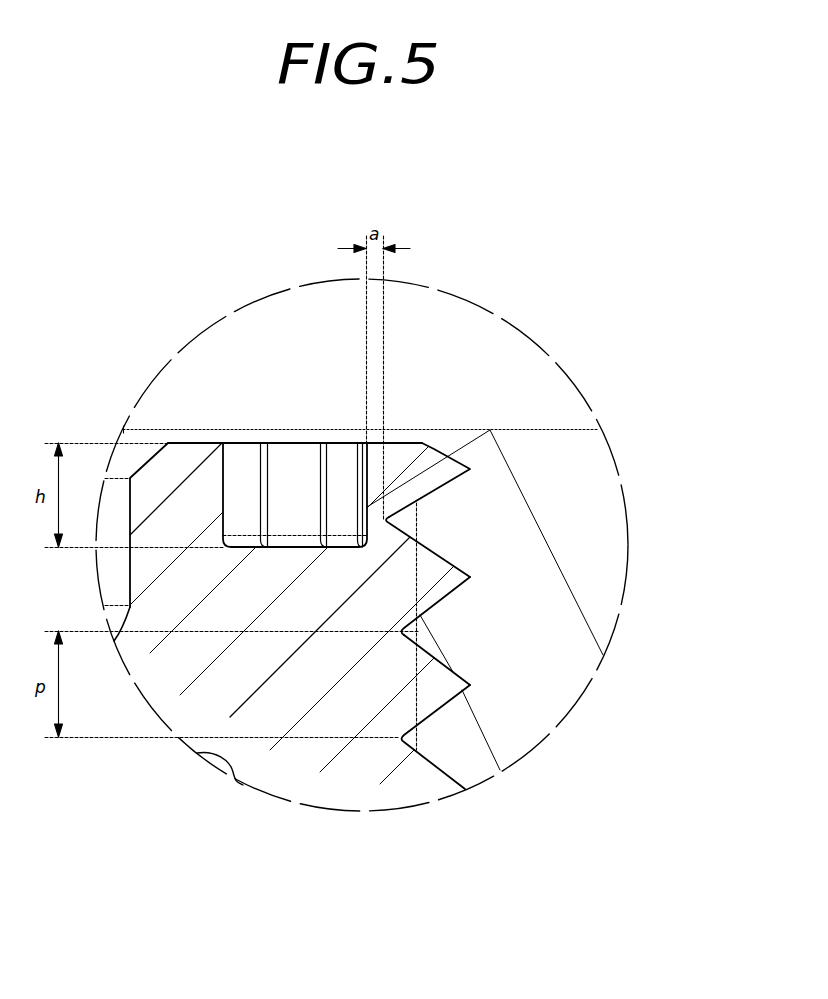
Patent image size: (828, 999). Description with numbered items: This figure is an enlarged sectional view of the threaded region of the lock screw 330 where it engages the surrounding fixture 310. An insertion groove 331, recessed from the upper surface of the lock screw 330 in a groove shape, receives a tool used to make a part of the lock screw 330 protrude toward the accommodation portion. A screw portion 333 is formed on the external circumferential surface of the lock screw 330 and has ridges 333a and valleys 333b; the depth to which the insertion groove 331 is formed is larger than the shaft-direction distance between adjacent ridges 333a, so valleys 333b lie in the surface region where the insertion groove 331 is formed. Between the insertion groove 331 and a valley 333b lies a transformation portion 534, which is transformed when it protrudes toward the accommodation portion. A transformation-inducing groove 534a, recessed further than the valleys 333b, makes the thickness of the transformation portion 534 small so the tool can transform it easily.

The implant fixture 310 is at (573, 453).
The lock screw 330 is at (173, 467).
The insertion groove 331 is at (299, 528).
The screw portion 333 is at (440, 673).
The ridge 333a is at (465, 685).
The valley 333b is at (417, 745).
The transformation portion 534 is at (433, 448).
The transformation-inducing groove 534a is at (385, 522).